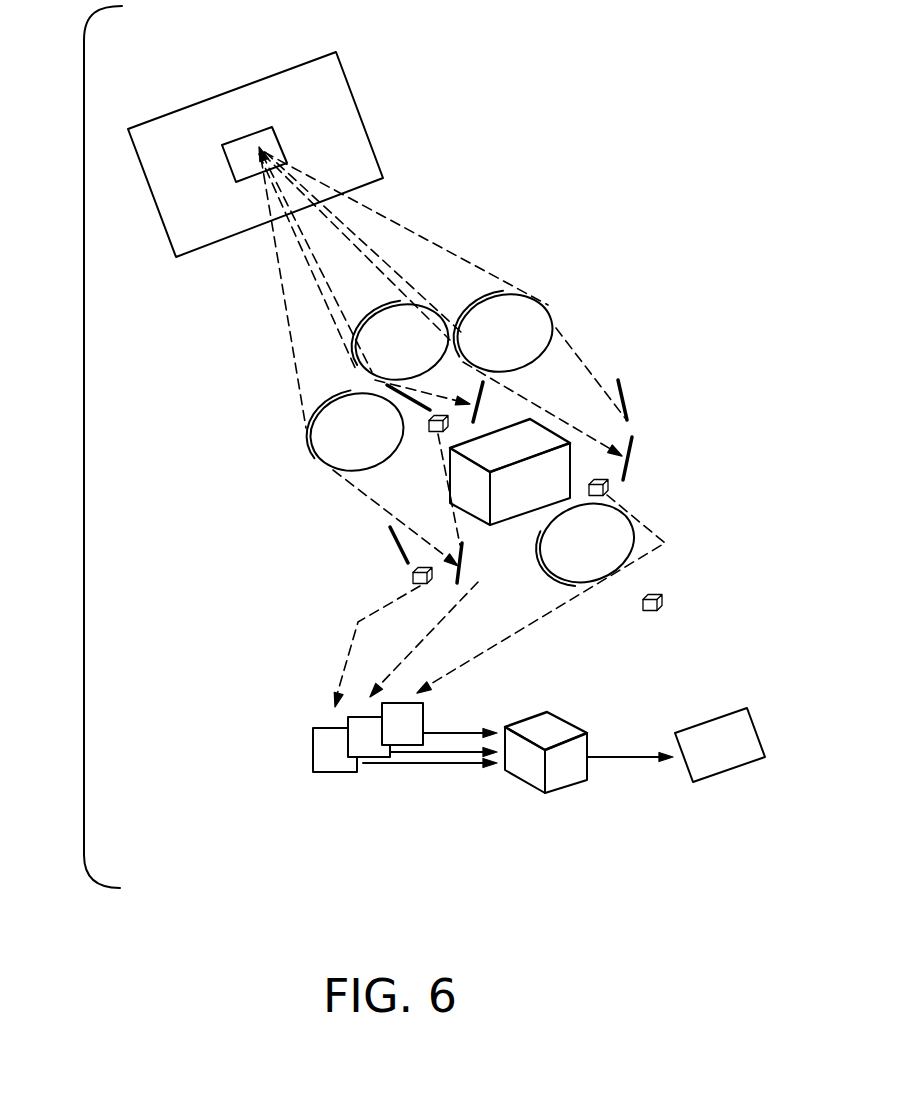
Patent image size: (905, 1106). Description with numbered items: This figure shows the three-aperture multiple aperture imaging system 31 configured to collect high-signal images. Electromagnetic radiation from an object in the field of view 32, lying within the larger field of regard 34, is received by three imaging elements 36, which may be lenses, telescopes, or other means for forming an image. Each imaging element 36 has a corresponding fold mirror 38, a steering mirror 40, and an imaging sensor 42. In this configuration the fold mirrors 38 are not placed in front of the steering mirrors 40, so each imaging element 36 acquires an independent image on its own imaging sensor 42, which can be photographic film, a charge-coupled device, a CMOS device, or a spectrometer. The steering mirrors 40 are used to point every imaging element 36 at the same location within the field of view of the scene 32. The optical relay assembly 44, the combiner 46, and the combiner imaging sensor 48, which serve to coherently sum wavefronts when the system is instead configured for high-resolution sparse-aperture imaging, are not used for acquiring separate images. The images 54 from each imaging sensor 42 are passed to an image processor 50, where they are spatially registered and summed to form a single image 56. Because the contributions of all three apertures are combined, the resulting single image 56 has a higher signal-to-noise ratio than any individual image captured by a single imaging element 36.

The multiple aperture imaging system 31 is at (84, 452).
The field of view 32 is at (246, 138).
The field of regard 34 is at (274, 75).
The imaging element 36 is at (440, 310).
The fold mirror 38 is at (625, 392).
The steering mirror 40 is at (484, 393).
The imaging sensor 42 is at (430, 430).
The optical relay assembly 44 is at (573, 448).
The combiner 46 is at (541, 563).
The combiner imaging sensor 48 is at (663, 605).
The image processor 50 is at (528, 772).
The images 54 is at (313, 757).
The single image 56 is at (747, 757).